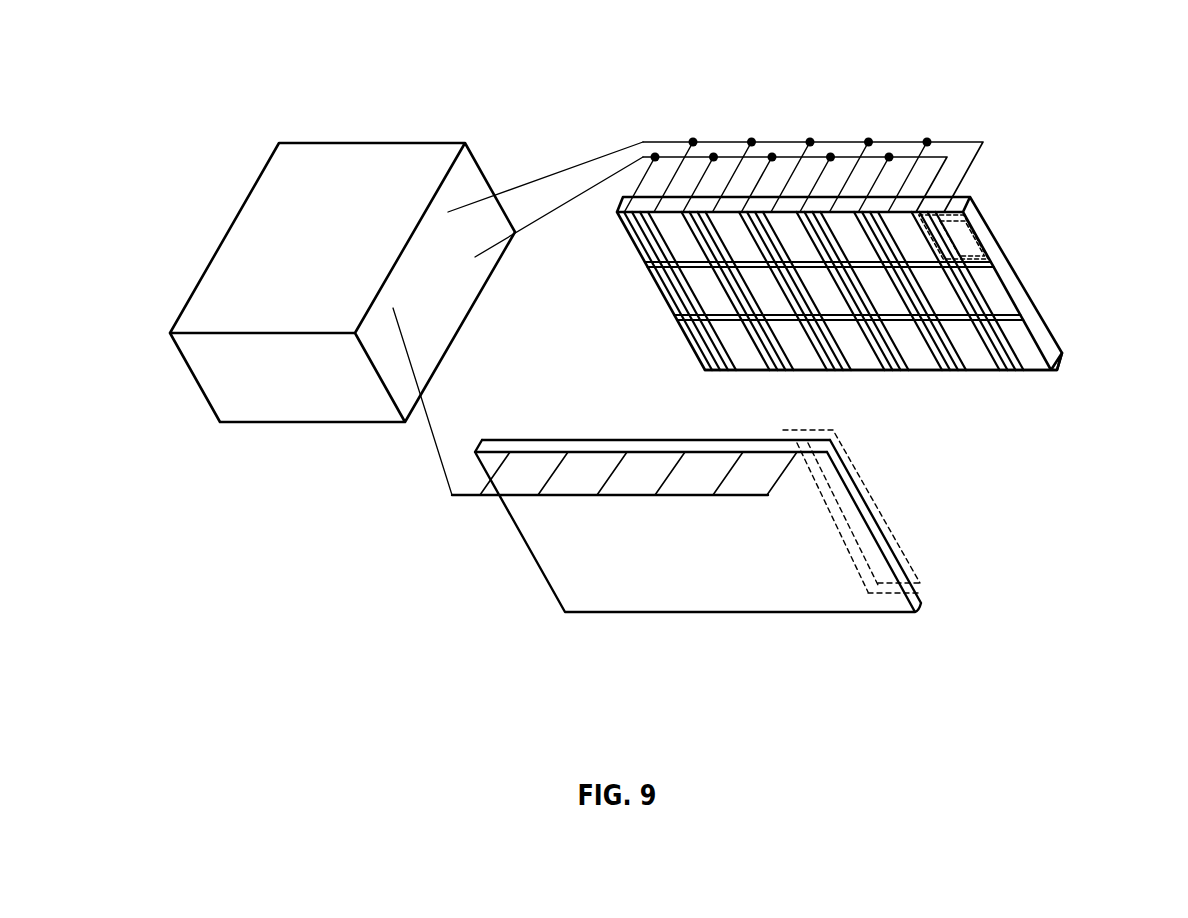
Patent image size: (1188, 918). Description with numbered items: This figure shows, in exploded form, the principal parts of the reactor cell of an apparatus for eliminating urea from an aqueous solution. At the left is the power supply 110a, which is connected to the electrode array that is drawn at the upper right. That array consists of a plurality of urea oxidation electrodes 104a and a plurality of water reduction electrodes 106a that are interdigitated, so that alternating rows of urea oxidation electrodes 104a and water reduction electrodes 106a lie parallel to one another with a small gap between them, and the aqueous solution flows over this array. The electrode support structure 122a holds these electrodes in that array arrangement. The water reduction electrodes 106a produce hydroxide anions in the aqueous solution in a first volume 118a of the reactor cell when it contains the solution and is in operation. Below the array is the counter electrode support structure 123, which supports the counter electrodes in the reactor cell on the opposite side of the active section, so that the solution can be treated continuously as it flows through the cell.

The power supply 110a is at (332, 165).
The first volume 118a is at (960, 242).
The electrode support structure 122a is at (1037, 315).
The urea oxidation electrode 104a is at (997, 353).
The water reduction electrode 106a is at (1025, 353).
The counter electrode support structure 123 is at (627, 608).